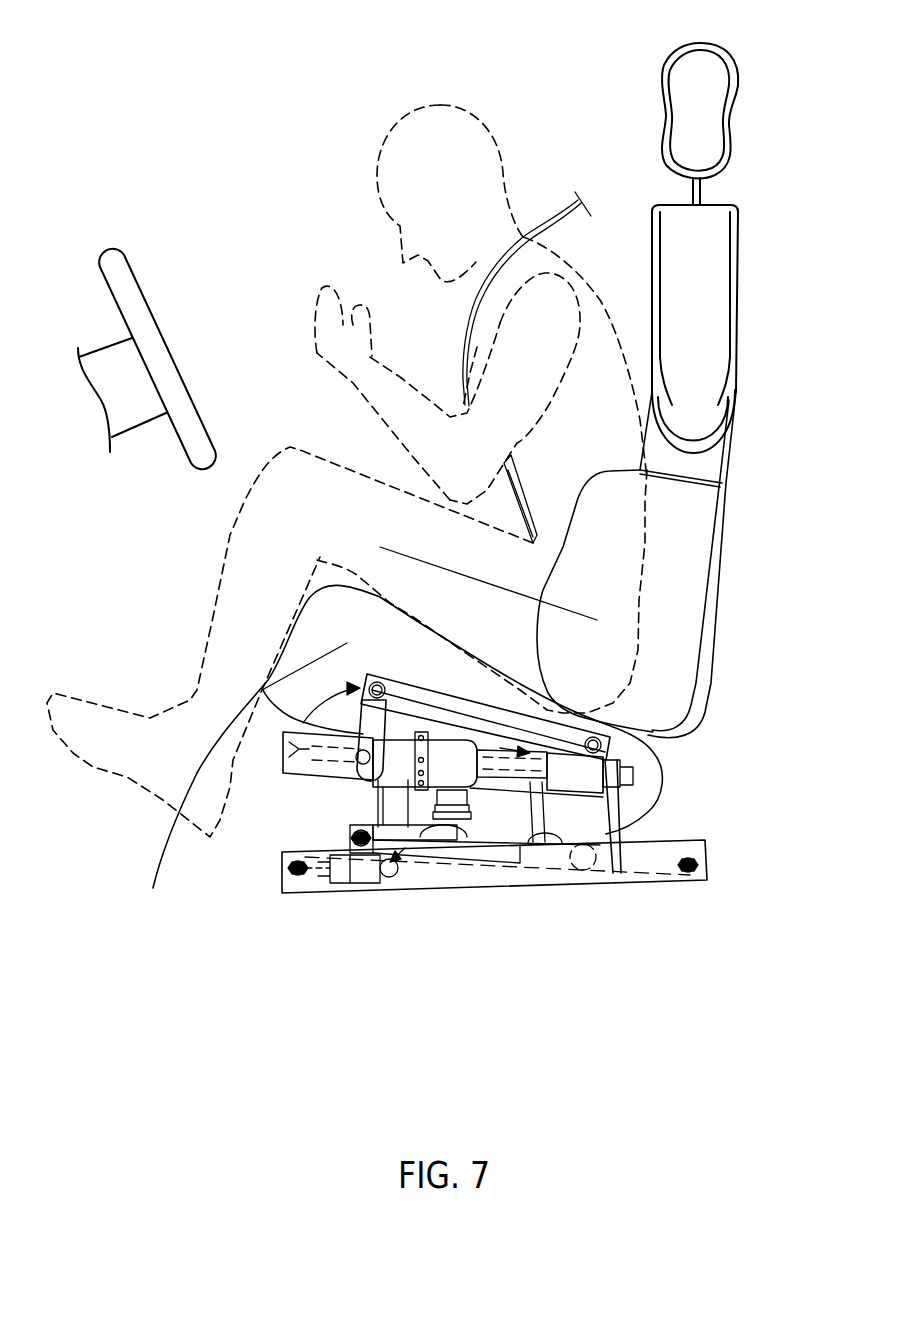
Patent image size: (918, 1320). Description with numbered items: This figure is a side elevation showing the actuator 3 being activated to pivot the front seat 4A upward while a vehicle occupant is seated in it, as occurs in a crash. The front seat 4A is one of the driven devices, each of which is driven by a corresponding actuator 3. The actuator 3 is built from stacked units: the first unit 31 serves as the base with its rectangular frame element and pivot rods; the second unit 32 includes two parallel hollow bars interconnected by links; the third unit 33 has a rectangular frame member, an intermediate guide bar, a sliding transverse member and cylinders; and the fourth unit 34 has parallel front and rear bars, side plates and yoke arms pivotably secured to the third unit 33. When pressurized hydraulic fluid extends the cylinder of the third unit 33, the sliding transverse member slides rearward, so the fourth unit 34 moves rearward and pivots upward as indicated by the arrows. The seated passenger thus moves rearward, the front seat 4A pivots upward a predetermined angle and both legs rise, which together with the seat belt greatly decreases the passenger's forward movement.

The actuator 3 is at (318, 914).
The first unit 31 is at (485, 880).
The second unit 32 is at (620, 822).
The third unit 33 is at (297, 774).
The fourth unit 34 is at (572, 733).
The front seat 4A is at (741, 506).